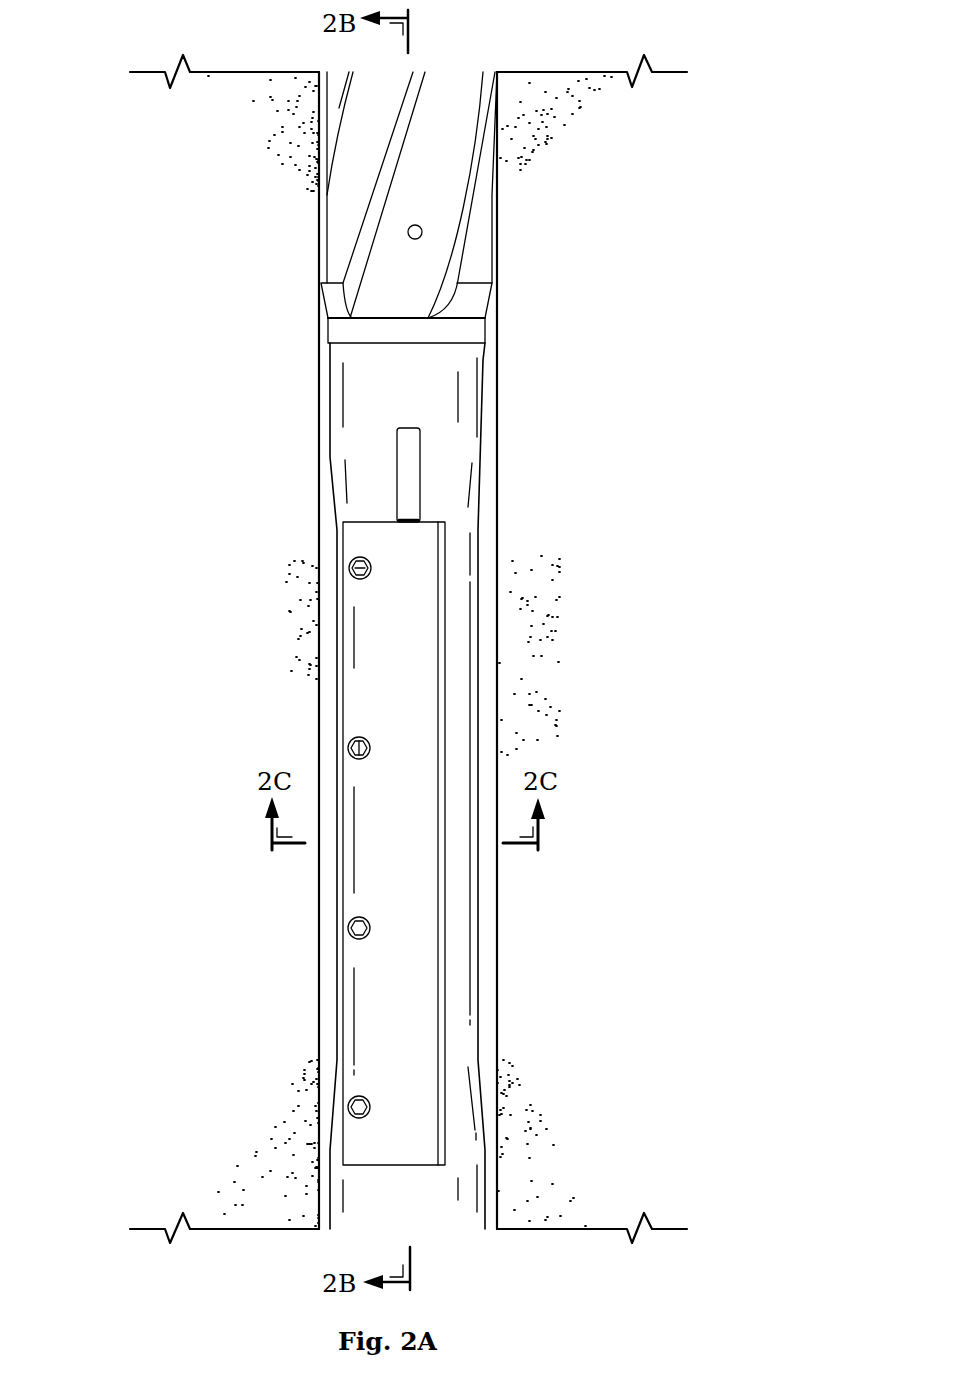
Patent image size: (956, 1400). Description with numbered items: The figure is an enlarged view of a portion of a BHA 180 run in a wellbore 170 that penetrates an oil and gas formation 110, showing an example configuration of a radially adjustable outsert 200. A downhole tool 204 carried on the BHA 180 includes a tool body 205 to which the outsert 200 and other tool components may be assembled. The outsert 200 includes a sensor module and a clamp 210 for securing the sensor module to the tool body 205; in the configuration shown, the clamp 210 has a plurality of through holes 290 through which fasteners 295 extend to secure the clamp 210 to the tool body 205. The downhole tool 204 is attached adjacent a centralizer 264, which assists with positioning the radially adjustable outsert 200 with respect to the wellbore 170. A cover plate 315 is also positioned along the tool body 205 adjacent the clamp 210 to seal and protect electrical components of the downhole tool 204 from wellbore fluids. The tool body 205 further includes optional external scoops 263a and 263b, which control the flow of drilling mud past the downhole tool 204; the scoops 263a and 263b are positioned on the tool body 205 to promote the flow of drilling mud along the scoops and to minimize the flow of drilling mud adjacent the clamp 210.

The BHA 180 is at (108, 108).
The oil and gas formation 110 is at (605, 650).
The wellbore 170 is at (497, 972).
The centralizer 264 is at (485, 243).
The radially adjustable outsert 200 is at (366, 773).
The downhole tool 204 is at (494, 401).
The external scoop 263a is at (336, 742).
The external scoop 263b is at (478, 922).
The tool body 205 is at (470, 538).
The cover plate 315 is at (412, 448).
The clamp 210 is at (363, 952).
The fasteners 295 is at (348, 568).
The through holes 290 is at (361, 737).